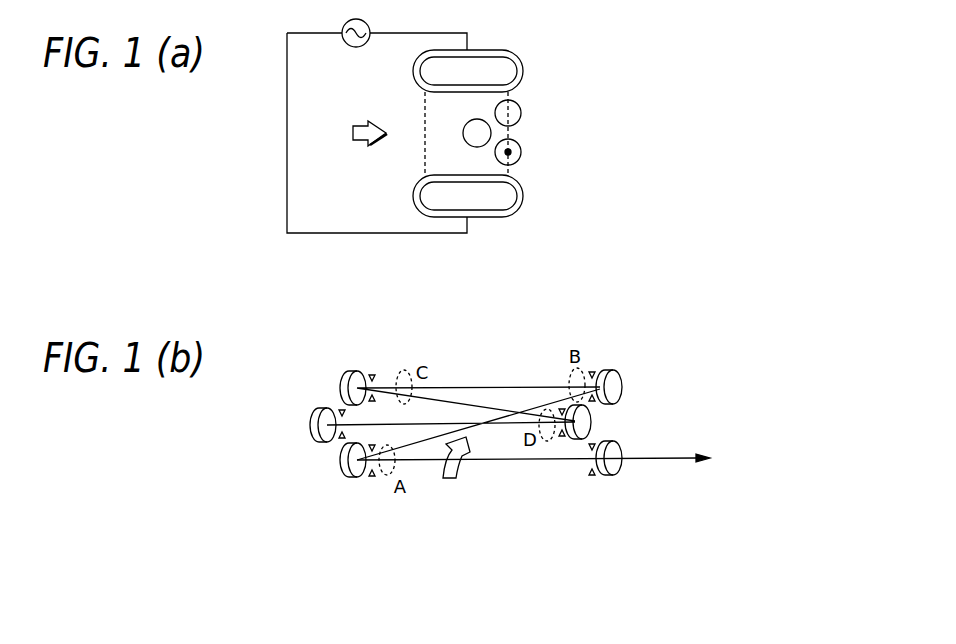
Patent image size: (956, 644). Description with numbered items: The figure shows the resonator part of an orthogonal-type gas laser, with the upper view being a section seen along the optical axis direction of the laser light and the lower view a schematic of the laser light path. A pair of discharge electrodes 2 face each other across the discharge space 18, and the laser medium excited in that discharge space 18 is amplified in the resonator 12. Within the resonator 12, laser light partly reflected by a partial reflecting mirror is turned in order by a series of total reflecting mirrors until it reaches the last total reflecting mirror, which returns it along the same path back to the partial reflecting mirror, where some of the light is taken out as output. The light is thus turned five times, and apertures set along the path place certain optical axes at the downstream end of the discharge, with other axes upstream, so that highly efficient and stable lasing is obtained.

The discharge electrode 2 is at (478, 51).
The resonator 12 is at (608, 524).
The discharge space 18 is at (418, 108).